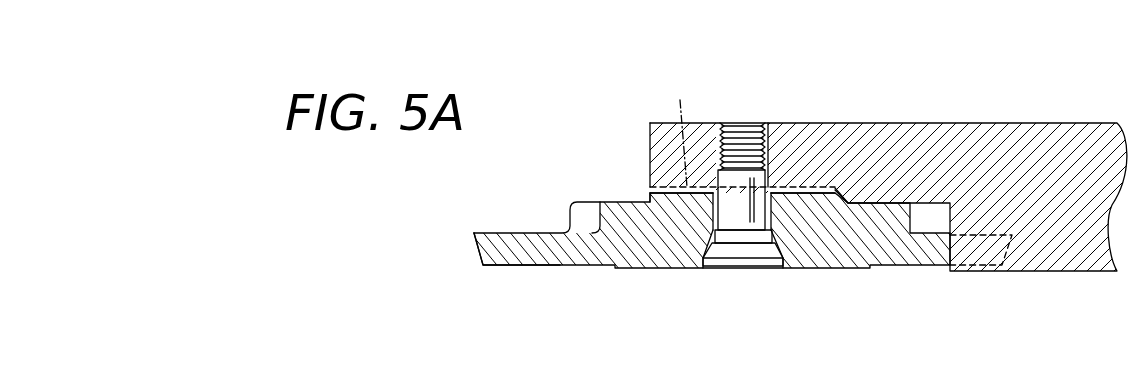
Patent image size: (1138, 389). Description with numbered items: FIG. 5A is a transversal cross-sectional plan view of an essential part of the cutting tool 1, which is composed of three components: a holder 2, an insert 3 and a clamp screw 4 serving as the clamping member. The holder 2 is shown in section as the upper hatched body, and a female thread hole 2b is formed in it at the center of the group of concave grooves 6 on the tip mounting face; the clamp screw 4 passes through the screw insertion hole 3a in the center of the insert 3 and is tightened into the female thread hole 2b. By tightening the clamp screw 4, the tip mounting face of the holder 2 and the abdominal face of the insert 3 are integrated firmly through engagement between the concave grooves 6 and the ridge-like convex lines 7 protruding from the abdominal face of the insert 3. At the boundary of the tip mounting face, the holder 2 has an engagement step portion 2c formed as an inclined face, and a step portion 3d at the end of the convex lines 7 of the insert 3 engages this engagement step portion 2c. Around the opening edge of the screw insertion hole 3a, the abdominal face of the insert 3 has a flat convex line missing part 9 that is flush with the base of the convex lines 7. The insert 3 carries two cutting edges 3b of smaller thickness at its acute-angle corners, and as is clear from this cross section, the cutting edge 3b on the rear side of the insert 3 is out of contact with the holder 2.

The cutting tool 1 is at (968, 76).
The holder 2 is at (1063, 121).
The female thread hole 2b is at (748, 123).
The engagement step portion 2c is at (845, 205).
The insert 3 is at (843, 268).
The screw insertion hole 3a is at (718, 228).
The cutting edge 3b is at (562, 268).
The step portion 3d is at (650, 194).
The clamp screw 4 is at (757, 248).
The concave groove 6 is at (678, 132).
The convex line 7 is at (662, 170).
The convex line missing part 9 is at (780, 175).